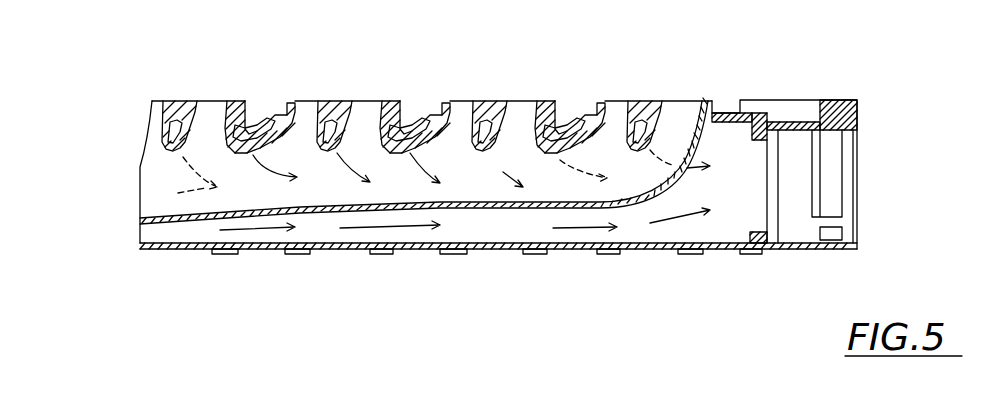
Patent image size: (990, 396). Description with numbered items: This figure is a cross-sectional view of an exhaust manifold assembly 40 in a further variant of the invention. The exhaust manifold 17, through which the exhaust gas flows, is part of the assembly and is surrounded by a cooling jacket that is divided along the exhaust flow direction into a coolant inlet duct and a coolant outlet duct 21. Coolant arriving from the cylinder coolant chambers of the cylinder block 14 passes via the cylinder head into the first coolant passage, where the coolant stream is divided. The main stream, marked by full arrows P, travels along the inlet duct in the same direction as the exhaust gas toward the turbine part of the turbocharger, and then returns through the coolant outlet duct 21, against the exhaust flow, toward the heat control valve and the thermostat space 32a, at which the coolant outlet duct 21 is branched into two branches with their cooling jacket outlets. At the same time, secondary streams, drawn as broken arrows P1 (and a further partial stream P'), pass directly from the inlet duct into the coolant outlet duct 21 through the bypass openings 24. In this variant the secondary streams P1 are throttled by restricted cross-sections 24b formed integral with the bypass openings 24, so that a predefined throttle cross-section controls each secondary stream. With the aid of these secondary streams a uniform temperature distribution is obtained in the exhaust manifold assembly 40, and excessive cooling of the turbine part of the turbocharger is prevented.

The cylinder block 14 is at (460, 106).
The restricted cross-sections 24b is at (410, 103).
The bypass opening 24 is at (650, 127).
The thermostat space 32a is at (793, 183).
The exhaust manifold 17 is at (322, 183).
The exhaust manifold assembly 40 is at (428, 250).
The coolant outlet duct 21 is at (497, 227).
The main coolant stream P is at (678, 264).
The secondary coolant streams P1 is at (450, 170).
The partial air flow P' is at (187, 177).